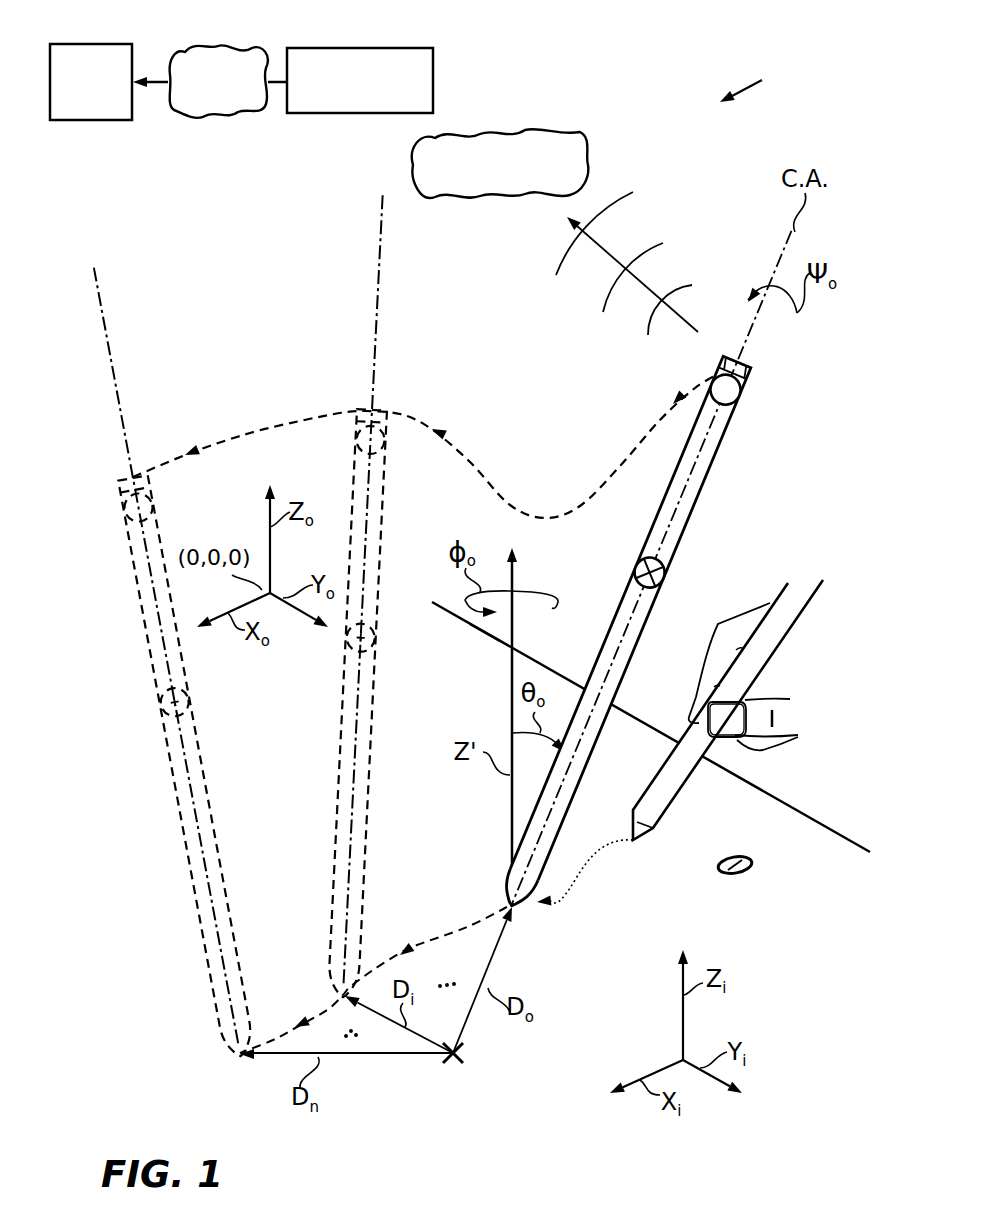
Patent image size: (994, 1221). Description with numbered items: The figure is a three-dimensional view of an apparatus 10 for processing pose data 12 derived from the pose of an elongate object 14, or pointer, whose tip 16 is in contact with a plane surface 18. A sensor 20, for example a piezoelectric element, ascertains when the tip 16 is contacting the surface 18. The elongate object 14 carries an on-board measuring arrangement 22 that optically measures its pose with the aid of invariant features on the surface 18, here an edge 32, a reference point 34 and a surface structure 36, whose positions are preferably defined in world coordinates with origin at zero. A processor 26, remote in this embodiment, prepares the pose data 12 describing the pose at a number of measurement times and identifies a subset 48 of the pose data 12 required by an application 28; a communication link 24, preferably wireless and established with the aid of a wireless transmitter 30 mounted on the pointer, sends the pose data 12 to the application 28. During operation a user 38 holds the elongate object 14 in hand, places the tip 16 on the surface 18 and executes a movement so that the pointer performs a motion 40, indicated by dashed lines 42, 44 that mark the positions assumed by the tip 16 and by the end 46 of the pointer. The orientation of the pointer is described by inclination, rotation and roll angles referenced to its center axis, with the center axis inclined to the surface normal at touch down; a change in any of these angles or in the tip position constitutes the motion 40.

The apparatus 10 is at (757, 83).
The pose data 12 is at (533, 130).
The elongate object 14 is at (720, 455).
The tip 16 is at (510, 904).
The plane surface 18 is at (804, 832).
The sensor 20 is at (517, 882).
The on-board measuring arrangement 22 is at (632, 570).
The communication link 24 is at (673, 203).
The processor 26 is at (355, 113).
The application 28 is at (100, 120).
The wireless transmitter 30 is at (742, 393).
The edge 32 is at (483, 634).
The reference point 34 is at (445, 1063).
The surface structure 36 is at (733, 876).
The user 38 is at (745, 612).
The motion 40 is at (143, 853).
The dashed line (trace) 42 is at (450, 937).
The dashed line 44 is at (546, 514).
The end 46 is at (748, 363).
The subset 48 is at (222, 118).